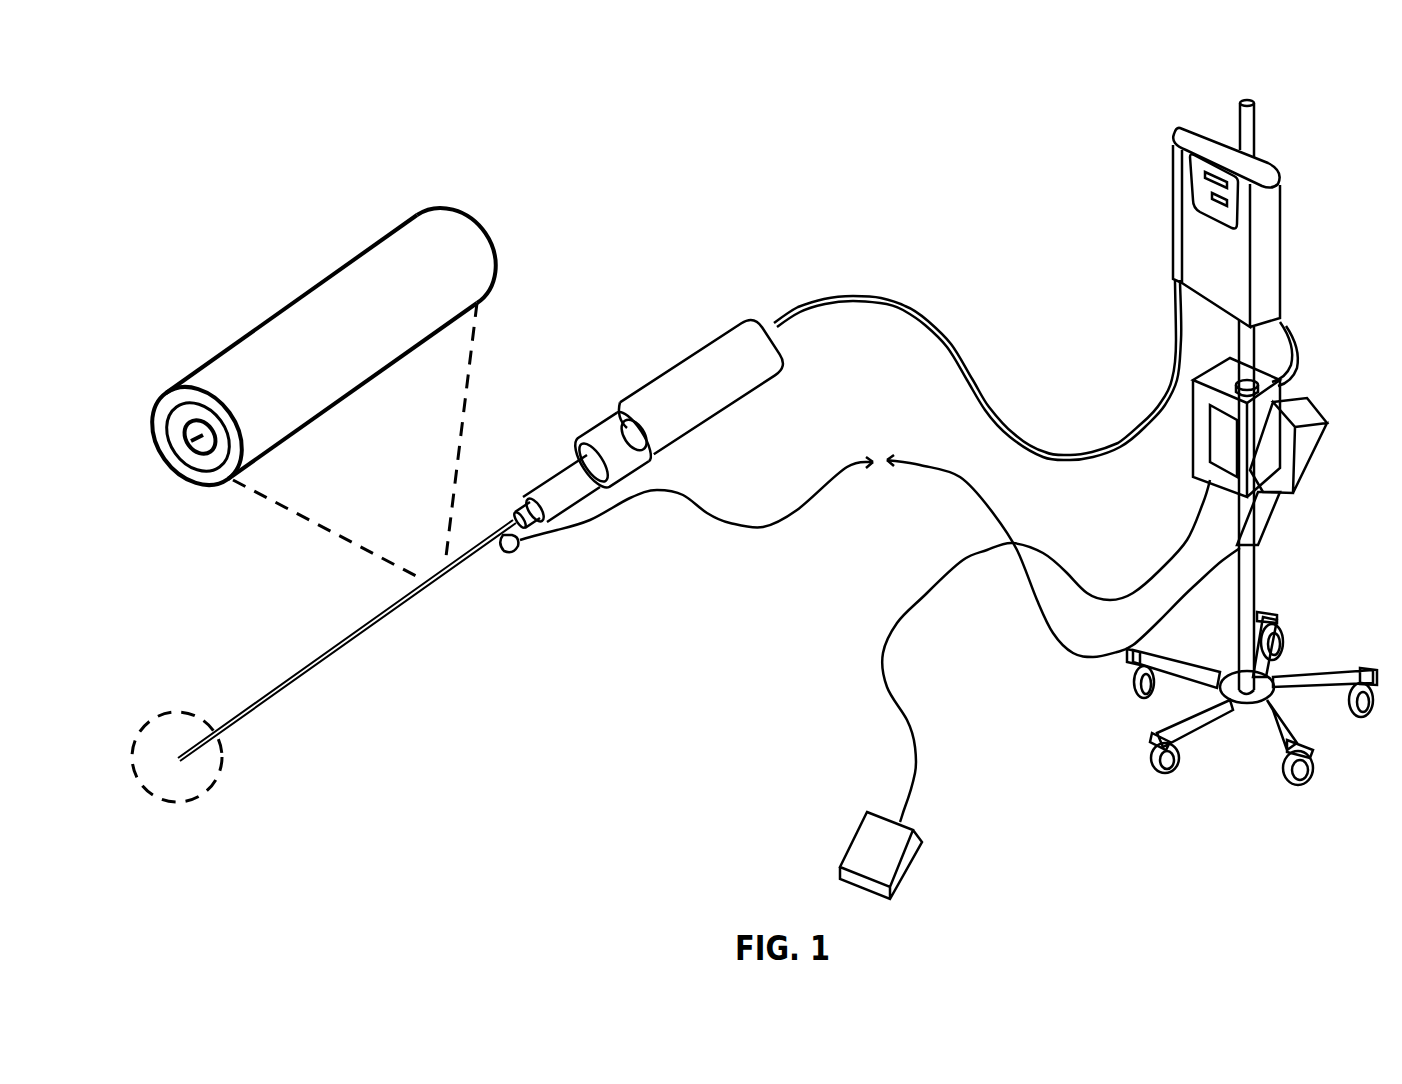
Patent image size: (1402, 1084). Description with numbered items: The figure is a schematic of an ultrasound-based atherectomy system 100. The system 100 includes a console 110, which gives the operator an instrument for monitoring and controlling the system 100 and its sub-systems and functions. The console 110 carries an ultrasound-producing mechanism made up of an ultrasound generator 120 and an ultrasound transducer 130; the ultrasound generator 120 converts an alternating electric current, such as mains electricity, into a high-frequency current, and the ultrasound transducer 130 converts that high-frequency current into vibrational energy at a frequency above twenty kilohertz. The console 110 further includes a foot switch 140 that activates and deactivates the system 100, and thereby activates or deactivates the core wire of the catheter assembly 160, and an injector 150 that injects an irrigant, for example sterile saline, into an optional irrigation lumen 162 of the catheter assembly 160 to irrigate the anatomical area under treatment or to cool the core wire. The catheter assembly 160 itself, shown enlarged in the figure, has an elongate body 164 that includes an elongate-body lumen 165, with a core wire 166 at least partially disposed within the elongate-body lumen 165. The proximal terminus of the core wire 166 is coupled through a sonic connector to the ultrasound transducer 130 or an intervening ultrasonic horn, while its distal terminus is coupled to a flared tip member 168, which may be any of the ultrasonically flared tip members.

The ultrasound-based atherectomy system 100 is at (892, 99).
The console 110 is at (1340, 326).
The ultrasound generator 120 is at (1198, 138).
The ultrasound transducer 130 is at (743, 336).
The foot switch 140 is at (882, 840).
The injector 150 is at (1287, 468).
The catheter assembly 160 is at (467, 663).
The irrigation lumen 162 is at (507, 538).
The elongate body 164 is at (312, 312).
The elongate-body lumen 165 is at (508, 244).
The core wire 166 is at (172, 450).
The flared tip member 168 is at (177, 758).